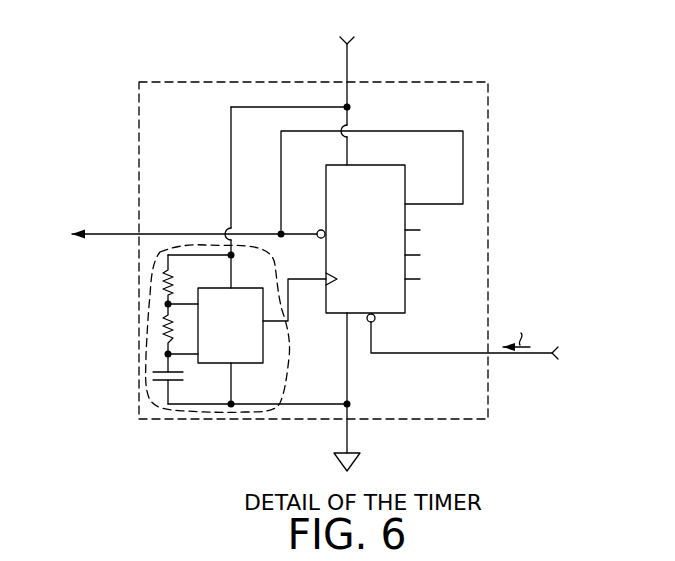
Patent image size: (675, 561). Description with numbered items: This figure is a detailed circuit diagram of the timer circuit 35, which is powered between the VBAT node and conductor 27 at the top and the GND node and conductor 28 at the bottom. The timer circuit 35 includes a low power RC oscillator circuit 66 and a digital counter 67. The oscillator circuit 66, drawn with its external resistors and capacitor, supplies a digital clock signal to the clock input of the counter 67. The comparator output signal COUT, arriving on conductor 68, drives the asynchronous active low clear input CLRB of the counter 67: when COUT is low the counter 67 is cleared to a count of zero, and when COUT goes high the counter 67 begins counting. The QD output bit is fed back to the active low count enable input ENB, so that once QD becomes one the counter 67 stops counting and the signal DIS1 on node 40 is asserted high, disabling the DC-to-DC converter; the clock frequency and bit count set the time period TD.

The timer circuit 35 is at (203, 82).
The VBAT node and conductor 27 is at (350, 62).
The digital counter 67 is at (384, 165).
The node 40 is at (111, 233).
The low power RC oscillator circuit 66 is at (257, 276).
The GND node and conductor 28 is at (345, 433).
The comparator output input COUT 68 is at (520, 355).